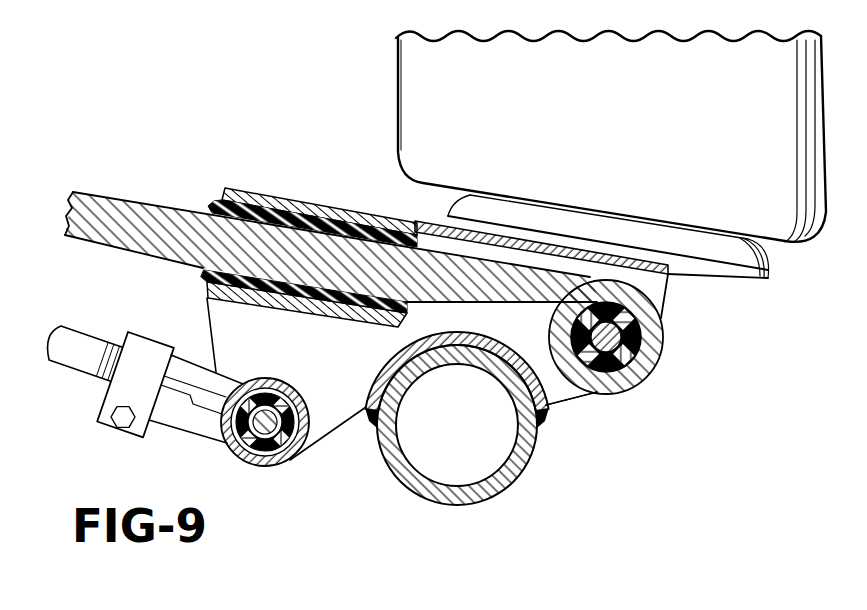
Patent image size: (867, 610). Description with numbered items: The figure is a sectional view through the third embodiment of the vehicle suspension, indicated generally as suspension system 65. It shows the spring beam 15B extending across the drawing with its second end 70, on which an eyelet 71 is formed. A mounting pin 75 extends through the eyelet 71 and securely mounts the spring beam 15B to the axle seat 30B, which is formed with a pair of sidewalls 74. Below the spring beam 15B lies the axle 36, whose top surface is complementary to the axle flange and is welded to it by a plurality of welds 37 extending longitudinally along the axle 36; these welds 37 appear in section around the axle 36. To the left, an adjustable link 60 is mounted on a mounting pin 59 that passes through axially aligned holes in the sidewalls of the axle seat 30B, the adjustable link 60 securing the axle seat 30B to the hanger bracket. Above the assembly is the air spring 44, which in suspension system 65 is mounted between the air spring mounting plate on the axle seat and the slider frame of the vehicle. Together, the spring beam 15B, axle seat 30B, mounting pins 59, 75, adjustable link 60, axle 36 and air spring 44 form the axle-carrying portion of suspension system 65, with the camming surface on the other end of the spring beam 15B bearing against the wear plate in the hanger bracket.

The air spring 44 is at (408, 85).
The spring beam 15B is at (153, 206).
The adjustable link 60 is at (73, 358).
The mounting pin 59 is at (271, 427).
The sidewalls 74 is at (336, 408).
The axle 36 is at (483, 494).
The welds 37 is at (543, 422).
The mounting pin 75 is at (614, 345).
The second end 70 is at (655, 381).
The eyelet 71 is at (611, 389).
The axle seat 30B is at (571, 414).
The suspension system 65 is at (601, 498).